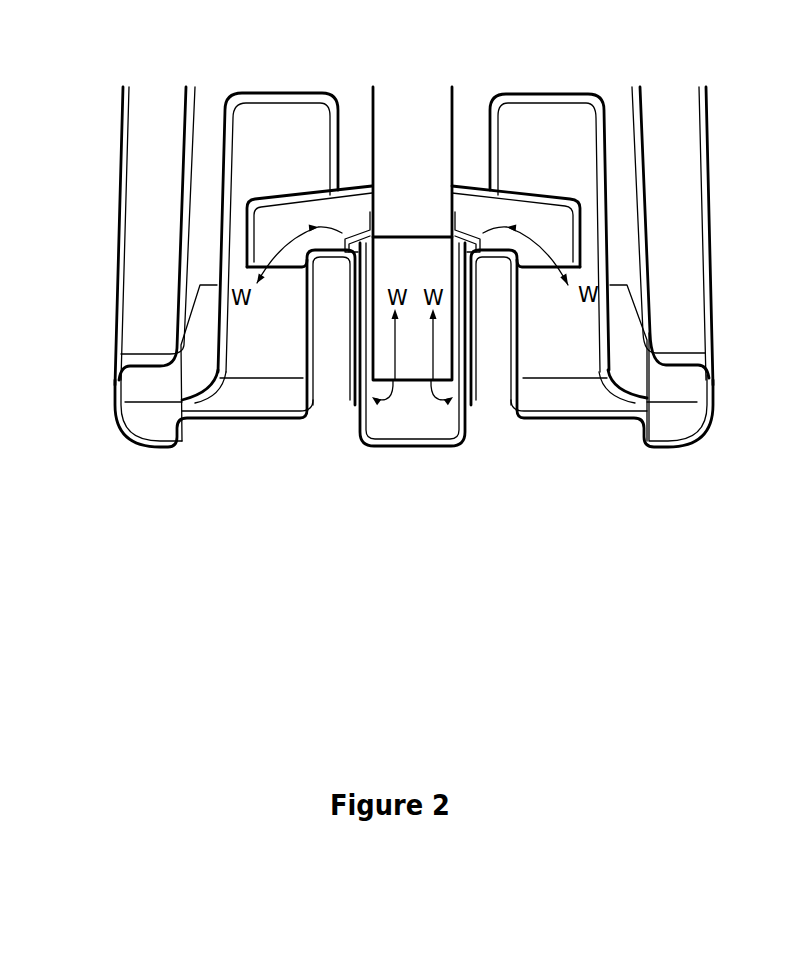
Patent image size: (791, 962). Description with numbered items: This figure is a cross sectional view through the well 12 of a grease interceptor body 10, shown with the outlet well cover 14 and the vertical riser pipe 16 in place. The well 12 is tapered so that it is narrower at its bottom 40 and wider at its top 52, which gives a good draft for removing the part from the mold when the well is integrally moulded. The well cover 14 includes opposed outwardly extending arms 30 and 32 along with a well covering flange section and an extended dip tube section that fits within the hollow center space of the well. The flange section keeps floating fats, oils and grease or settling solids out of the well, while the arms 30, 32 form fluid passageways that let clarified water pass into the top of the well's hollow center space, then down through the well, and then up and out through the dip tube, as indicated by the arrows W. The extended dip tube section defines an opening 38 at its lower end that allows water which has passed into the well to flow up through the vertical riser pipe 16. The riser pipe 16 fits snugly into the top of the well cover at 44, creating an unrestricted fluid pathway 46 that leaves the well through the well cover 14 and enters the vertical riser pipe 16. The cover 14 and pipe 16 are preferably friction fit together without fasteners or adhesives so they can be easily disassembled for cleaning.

The grease interceptor body 10 is at (75, 199).
The well 12 is at (360, 397).
The outlet well cover 14 is at (336, 229).
The vertical riser pipe 16 is at (455, 107).
The outwardly extending arm 30 is at (255, 198).
The outwardly extending arm 32 is at (527, 190).
The opening 38 is at (412, 385).
The bottom 40 is at (397, 448).
The top of the well cover 44 is at (338, 190).
The fluid pathway 46 is at (415, 240).
The top 52 is at (353, 263).